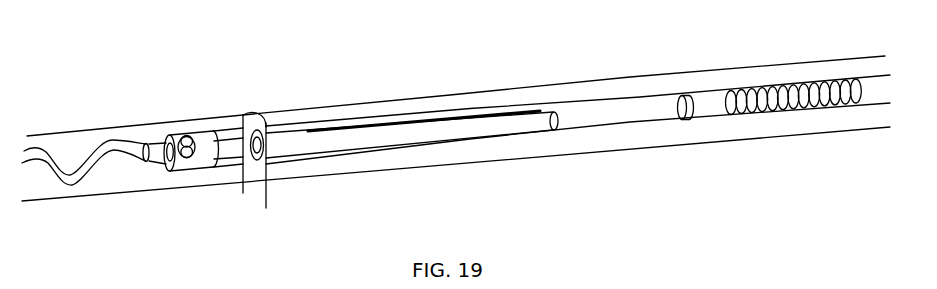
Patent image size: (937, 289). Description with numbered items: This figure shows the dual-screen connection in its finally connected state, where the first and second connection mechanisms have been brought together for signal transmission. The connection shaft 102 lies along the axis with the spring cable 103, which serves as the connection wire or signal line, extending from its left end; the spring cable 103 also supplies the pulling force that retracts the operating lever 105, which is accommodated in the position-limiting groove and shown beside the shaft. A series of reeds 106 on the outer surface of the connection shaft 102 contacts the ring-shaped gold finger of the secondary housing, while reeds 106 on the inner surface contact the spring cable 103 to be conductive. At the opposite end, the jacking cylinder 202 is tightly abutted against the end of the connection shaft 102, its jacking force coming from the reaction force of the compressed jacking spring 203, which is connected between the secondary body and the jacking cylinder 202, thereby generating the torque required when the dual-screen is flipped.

The connection shaft 102 is at (456, 119).
The spring cable 103 is at (92, 129).
The operating lever 105 is at (171, 119).
The reeds 106 is at (412, 100).
The jacking cylinder 202 is at (666, 74).
The jacking spring 203 is at (808, 136).